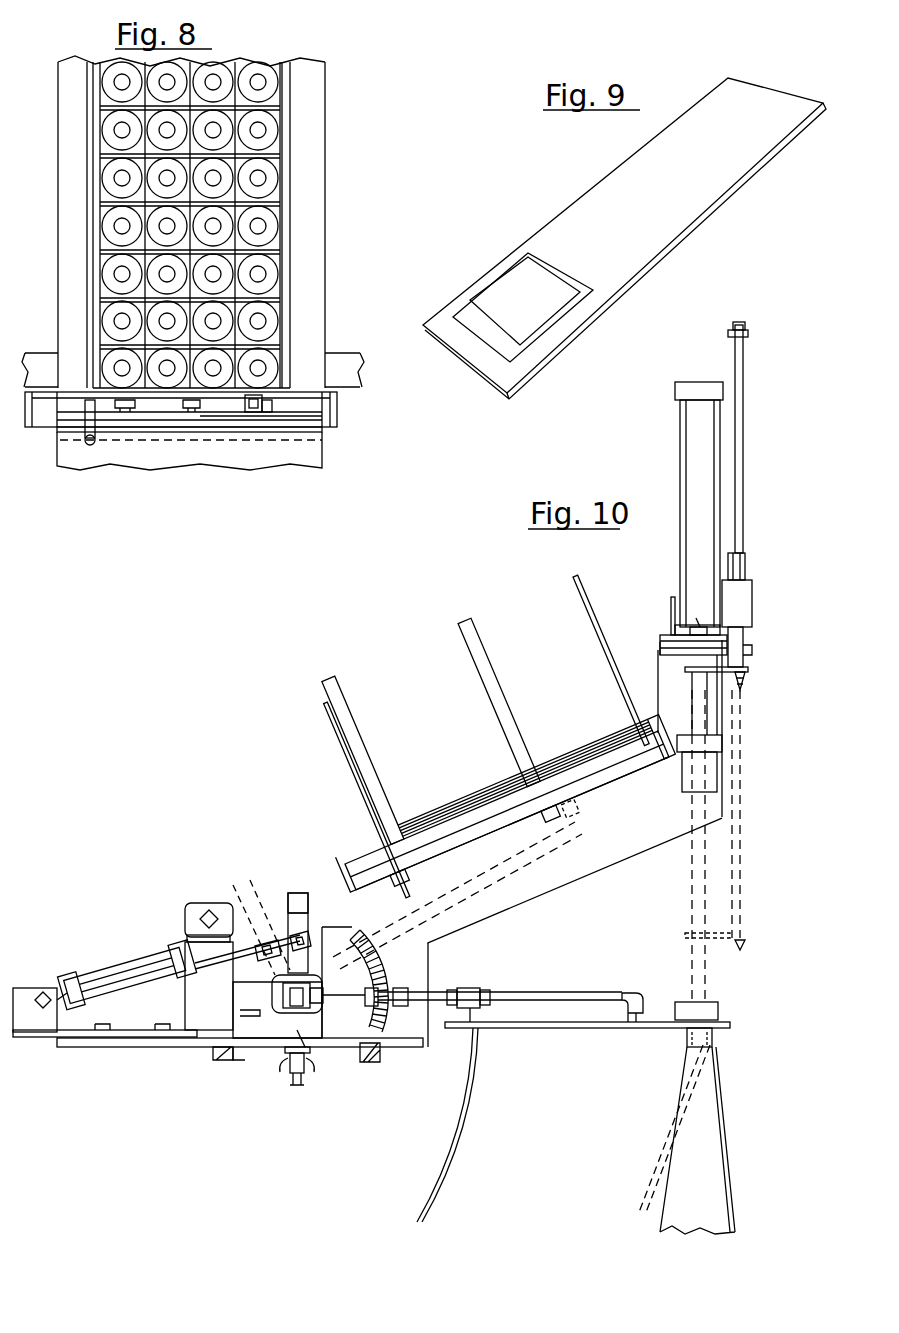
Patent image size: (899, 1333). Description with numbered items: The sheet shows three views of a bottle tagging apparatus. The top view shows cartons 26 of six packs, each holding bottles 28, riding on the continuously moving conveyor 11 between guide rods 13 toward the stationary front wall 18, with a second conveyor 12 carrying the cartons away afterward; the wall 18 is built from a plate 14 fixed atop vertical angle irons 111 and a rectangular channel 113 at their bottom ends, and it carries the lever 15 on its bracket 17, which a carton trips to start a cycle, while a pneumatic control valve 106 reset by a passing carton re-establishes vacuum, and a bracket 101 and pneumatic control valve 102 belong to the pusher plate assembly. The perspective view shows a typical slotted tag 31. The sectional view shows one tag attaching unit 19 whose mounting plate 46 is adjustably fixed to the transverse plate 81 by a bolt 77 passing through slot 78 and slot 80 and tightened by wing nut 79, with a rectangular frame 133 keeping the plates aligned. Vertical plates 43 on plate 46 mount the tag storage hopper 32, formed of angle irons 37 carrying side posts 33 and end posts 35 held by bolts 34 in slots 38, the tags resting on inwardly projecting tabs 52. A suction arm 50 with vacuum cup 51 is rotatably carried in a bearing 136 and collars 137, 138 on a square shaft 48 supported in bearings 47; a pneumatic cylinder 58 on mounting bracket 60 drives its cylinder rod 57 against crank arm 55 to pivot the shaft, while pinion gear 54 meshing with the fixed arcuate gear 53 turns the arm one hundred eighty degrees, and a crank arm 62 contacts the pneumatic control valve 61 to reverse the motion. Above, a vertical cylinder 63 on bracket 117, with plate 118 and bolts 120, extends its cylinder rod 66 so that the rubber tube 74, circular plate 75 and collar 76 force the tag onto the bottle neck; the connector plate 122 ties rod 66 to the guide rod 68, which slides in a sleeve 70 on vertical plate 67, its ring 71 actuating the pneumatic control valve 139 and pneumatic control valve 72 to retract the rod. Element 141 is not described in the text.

In FIG. 8, the conveyor 11 is at (318, 314).
In FIG. 8, the second conveyor 12 is at (128, 461).
In FIG. 8, the guide rods 13 is at (93, 160).
In FIG. 8, the plate 14 is at (215, 412).
In FIG. 8, the lever 15 is at (276, 408).
In FIG. 8, the bracket 17 is at (245, 408).
In FIG. 8, the front wall 18 is at (328, 432).
In FIG. 10, the tag attaching unit 19 is at (582, 885).
In FIG. 8, the carton 26 is at (285, 346).
In FIG. 8, the bottle 28 is at (110, 132).
In FIG. 10, the bottle 28 is at (700, 1164).
In FIG. 9, the tag 31 is at (634, 211).
In FIG. 10, the tag 31 is at (554, 942).
In FIG. 10, the tag storage hopper 32 is at (486, 761).
In FIG. 10, the side posts 33 is at (442, 722).
In FIG. 10, the bolts 34 is at (505, 808).
In FIG. 10, the end posts 35 is at (471, 745).
In FIG. 10, the angle irons 37 is at (348, 859).
In FIG. 10, the slots 38 is at (517, 835).
In FIG. 10, the vertical plates 43 is at (566, 861).
In FIG. 10, the mounting plate 46 is at (130, 1047).
In FIG. 10, the bearings 47 is at (235, 1019).
In FIG. 10, the square shaft 48 is at (285, 1012).
In FIG. 10, the suction arm 50 is at (512, 990).
In FIG. 10, the vacuum cup 51 is at (630, 1025).
In FIG. 10, the tabs 52 is at (462, 883).
In FIG. 10, the arcuate gear 53 is at (388, 1046).
In FIG. 10, the pinion gear 54 is at (375, 944).
In FIG. 10, the crank arm 55 is at (308, 932).
In FIG. 10, the cylinder rod 57 is at (192, 946).
In FIG. 10, the pneumatic cylinder 58 is at (97, 972).
In FIG. 10, the mounting bracket 60 is at (45, 1036).
In FIG. 10, the pneumatic control valve 61 is at (192, 910).
In FIG. 10, the crank arm 62 is at (238, 900).
In FIG. 10, the vertical cylinder 63 is at (708, 512).
In FIG. 10, the cylinder rod 66 is at (660, 656).
In FIG. 10, the vertical plate 67 is at (728, 613).
In FIG. 10, the guide rod 68 is at (740, 472).
In FIG. 10, the sleeve 70 is at (742, 641).
In FIG. 10, the ring 71 is at (728, 334).
In FIG. 10, the pneumatic control valve 72 is at (752, 650).
In FIG. 10, the rubber tube 74 is at (697, 700).
In FIG. 10, the circular plate 75 is at (722, 744).
In FIG. 10, the collar 76 is at (690, 782).
In FIG. 10, the bolt 77 is at (296, 1087).
In FIG. 10, the slot 78 is at (283, 1055).
In FIG. 10, the wing nut 79 is at (288, 1072).
In FIG. 10, the slot 80 is at (312, 1073).
In FIG. 10, the transverse plate 81 is at (236, 1062).
In FIG. 8, the bracket 101 is at (192, 410).
In FIG. 8, the pneumatic control valve 102 is at (122, 410).
In FIG. 8, the pneumatic control valve 106 is at (74, 428).
In FIG. 8, the vertical angle irons 111 is at (35, 426).
In FIG. 8, the rectangular channel 113 is at (298, 414).
In FIG. 10, the bracket 117 is at (658, 648).
In FIG. 10, the plate 118 is at (672, 597).
In FIG. 10, the bolts 120 is at (698, 618).
In FIG. 10, the connector plate 122 is at (748, 669).
In FIG. 10, the rectangular frame 133 is at (213, 1054).
In FIG. 10, the bearing 136 is at (308, 1020).
In FIG. 10, the collar 137 is at (322, 992).
In FIG. 10, the collar 138 is at (275, 995).
In FIG. 10, the pneumatic control valve 139 is at (740, 585).
In FIG. 10, the guide chute 141 is at (463, 1125).